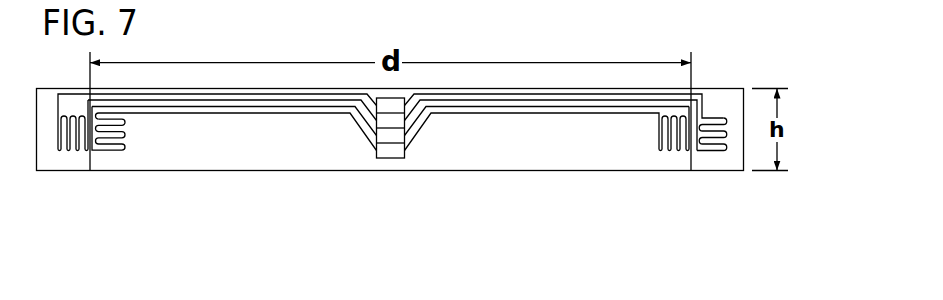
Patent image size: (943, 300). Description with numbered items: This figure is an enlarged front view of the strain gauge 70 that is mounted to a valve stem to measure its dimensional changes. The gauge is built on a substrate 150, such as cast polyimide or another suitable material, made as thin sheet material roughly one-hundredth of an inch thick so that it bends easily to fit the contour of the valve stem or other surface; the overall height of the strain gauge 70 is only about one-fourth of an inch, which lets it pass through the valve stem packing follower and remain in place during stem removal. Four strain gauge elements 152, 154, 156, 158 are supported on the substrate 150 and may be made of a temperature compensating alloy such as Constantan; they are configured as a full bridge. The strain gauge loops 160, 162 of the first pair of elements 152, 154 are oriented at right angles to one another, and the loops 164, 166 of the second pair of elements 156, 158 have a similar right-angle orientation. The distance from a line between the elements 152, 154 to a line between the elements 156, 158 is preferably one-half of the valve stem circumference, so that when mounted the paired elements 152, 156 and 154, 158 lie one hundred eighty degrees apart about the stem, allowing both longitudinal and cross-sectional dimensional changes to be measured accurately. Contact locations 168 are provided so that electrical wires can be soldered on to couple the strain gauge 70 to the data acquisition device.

The strain gauge 70 is at (313, 185).
The substrate 150 is at (244, 157).
The strain gauge element 152 is at (73, 162).
The strain gauge element 154 is at (112, 155).
The strain gauge element 156 is at (668, 160).
The strain gauge element 158 is at (710, 157).
The strain gauge loop 160 is at (56, 148).
The strain gauge loop 162 is at (130, 135).
The strain gauge loop 164 is at (657, 135).
The strain gauge loop 166 is at (710, 118).
The contact locations 168 is at (382, 160).